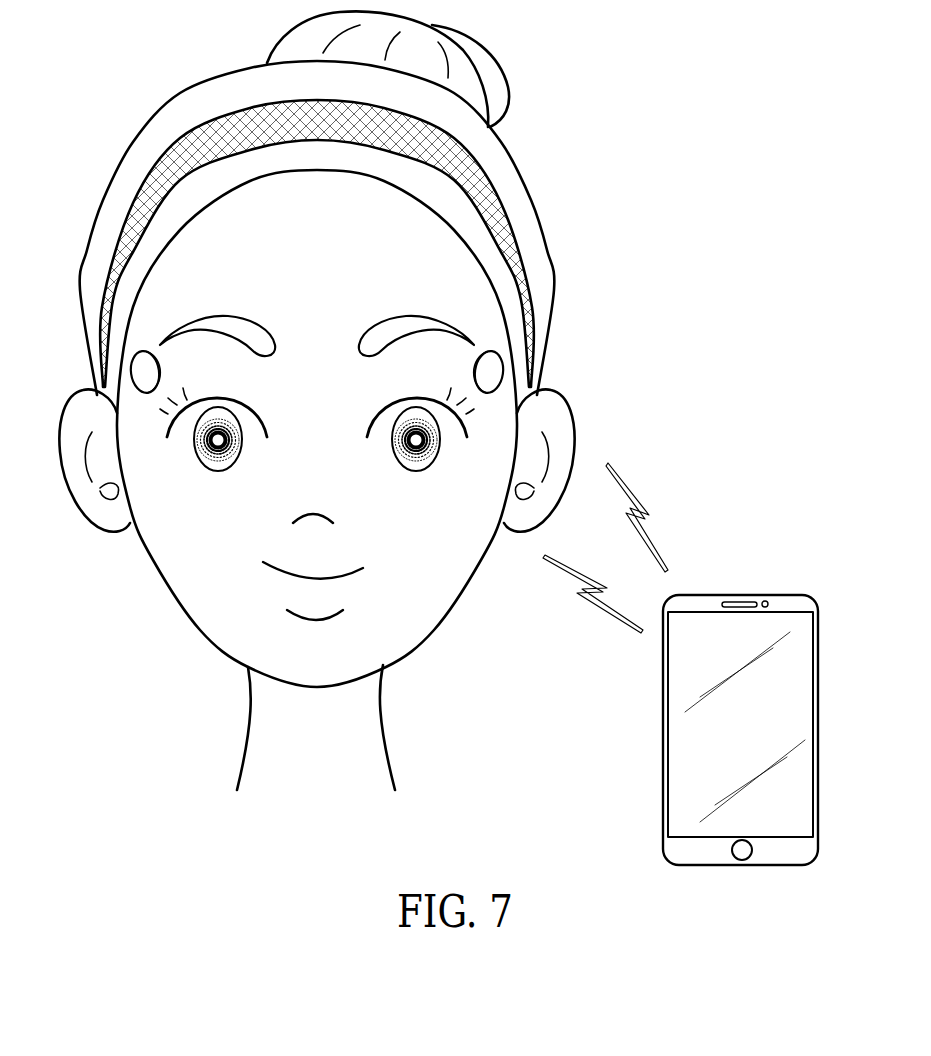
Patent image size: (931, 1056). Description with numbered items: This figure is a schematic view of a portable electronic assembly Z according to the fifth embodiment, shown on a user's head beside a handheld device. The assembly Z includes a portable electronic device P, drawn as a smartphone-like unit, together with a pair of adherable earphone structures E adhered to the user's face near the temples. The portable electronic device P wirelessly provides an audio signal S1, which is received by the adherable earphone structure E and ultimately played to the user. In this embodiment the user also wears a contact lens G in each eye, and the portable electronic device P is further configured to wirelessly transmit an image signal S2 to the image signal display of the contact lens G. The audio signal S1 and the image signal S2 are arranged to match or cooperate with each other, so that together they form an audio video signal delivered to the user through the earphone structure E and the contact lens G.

The adherable earphone structure E is at (143, 367).
The contact lens G is at (202, 456).
The portable electronic assembly Z is at (713, 430).
The audio signal S1 is at (648, 514).
The image signal S2 is at (590, 597).
The portable electronic device P is at (787, 597).